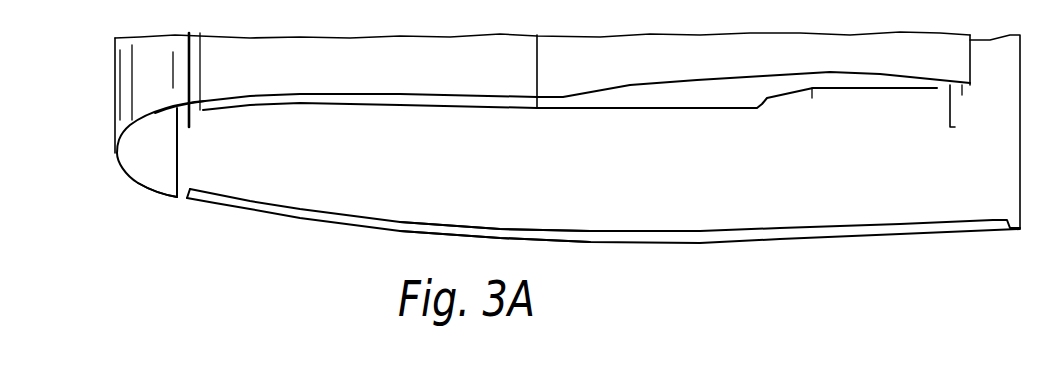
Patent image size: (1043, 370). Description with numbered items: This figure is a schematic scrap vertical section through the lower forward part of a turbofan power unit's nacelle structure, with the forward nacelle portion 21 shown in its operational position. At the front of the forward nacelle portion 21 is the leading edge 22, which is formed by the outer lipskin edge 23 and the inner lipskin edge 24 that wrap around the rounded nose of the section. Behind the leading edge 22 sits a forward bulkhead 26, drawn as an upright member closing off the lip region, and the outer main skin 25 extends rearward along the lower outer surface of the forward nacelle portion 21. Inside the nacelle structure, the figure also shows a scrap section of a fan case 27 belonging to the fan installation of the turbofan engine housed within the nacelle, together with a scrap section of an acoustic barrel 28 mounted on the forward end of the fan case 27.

The forward nacelle portion 21 is at (269, 216).
The leading edge 22 is at (119, 169).
The outer lipskin edge 23 is at (147, 186).
The inner lipskin edge 24 is at (142, 118).
The outer main skin 25 is at (495, 235).
The forward bulkhead 26 is at (179, 152).
The fan case 27 is at (685, 93).
The acoustic barrel 28 is at (420, 97).